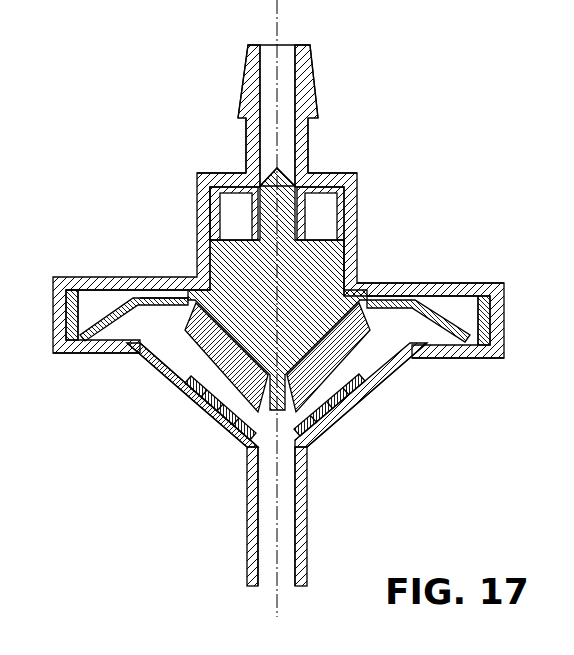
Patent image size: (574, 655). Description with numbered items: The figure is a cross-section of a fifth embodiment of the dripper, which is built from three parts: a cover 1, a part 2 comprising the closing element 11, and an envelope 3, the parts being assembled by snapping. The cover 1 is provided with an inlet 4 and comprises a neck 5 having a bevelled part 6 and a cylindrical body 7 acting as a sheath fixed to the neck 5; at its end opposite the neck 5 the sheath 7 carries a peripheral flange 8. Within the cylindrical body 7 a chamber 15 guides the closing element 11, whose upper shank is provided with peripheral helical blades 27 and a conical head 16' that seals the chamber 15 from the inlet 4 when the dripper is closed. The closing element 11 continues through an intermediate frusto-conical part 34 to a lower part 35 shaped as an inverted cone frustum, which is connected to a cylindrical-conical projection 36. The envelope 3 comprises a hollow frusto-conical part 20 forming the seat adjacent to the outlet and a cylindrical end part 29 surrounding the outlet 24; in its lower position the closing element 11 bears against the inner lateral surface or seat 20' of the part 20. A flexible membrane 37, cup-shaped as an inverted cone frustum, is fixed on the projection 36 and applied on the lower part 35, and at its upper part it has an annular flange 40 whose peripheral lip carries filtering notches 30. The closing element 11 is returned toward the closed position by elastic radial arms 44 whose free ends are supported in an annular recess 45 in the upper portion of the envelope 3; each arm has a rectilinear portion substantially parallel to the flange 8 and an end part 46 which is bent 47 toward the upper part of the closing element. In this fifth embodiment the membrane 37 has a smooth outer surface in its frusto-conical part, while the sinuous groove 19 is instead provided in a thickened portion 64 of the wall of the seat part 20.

The cover 1 is at (364, 218).
The closing element part 2 is at (438, 446).
The envelope 3 is at (188, 426).
The inlet 4 is at (291, 52).
The neck 5 is at (309, 132).
The bevelled part 6 is at (317, 102).
The cylindrical body 7 is at (357, 187).
The peripheral flange 8 is at (470, 283).
The closing element 11 is at (452, 358).
The chamber 15 is at (214, 184).
The conical head 16' is at (317, 163).
The sinuous groove 19 is at (238, 434).
The hollow frusto-conical part 20 is at (308, 357).
The seat 20' is at (377, 395).
The outlet 24 is at (266, 582).
The peripheral helical blades 27 is at (330, 204).
The cylindrical end part 29 is at (307, 536).
The filtering notches 30 is at (117, 340).
The intermediate frusto-conical part 34 is at (352, 291).
The lower part 35 is at (215, 418).
The cylindrical-conical projection 36 is at (252, 446).
The flexible membrane 37 is at (196, 342).
The annular flange 40 is at (165, 302).
The elastic radial arms 44 is at (155, 297).
The annular recess 45 is at (85, 312).
The end part 46 is at (108, 313).
The bend 47 is at (128, 293).
The thickened portion 64 is at (360, 425).